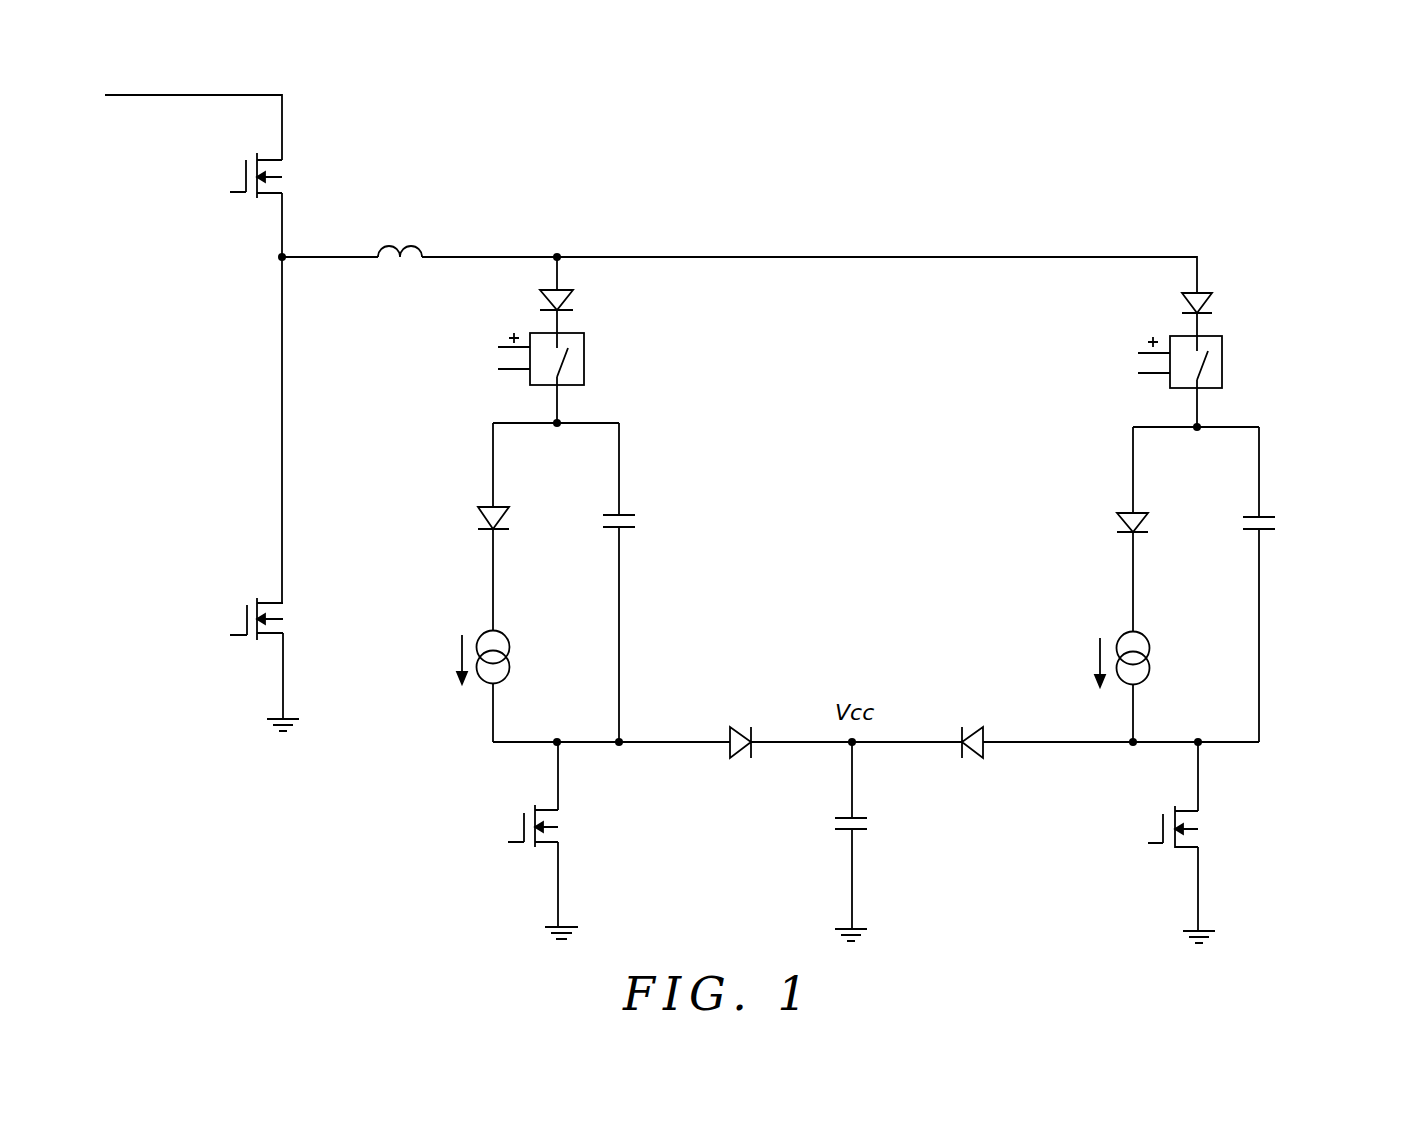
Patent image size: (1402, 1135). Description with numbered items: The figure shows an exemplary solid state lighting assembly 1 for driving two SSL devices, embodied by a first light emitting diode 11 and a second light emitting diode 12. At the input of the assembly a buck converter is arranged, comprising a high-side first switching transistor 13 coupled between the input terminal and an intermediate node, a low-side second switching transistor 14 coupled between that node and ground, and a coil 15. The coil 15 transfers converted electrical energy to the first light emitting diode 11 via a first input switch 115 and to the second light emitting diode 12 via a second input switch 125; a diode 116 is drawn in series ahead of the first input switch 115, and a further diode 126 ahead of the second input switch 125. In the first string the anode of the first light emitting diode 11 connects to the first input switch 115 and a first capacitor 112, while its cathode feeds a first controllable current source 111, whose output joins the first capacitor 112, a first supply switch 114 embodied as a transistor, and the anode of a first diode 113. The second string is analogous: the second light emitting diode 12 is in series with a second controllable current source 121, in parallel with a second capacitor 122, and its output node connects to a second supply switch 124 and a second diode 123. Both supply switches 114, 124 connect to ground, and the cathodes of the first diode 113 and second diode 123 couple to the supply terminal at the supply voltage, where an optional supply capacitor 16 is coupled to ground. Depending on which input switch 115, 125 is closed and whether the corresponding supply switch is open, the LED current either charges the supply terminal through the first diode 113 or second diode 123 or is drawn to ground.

The solid state lighting assembly 1 is at (962, 202).
The first LED1 11 is at (465, 513).
The second LED2 12 is at (1102, 518).
The first switching transistor 13 is at (235, 170).
The second switching transistor 14 is at (233, 613).
The coil 15 is at (400, 240).
The supply capacitor 16 is at (828, 822).
The first controllable current source 111 is at (450, 650).
The first capacitor 112 is at (641, 518).
The first diode 113 is at (742, 727).
The first supply switch 114 is at (510, 822).
The first input switch 115 is at (598, 354).
The first diode 116 is at (530, 297).
The second controllable current source 121 is at (1088, 655).
The second capacitor 122 is at (1283, 520).
The second diode 123 is at (973, 727).
The second supply switch 124 is at (1148, 822).
The second input switch 125 is at (1240, 357).
The second diode 126 is at (1170, 298).